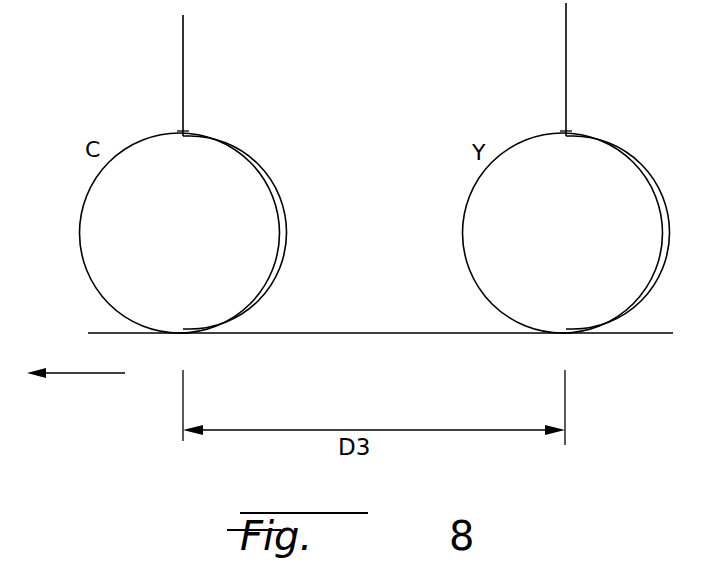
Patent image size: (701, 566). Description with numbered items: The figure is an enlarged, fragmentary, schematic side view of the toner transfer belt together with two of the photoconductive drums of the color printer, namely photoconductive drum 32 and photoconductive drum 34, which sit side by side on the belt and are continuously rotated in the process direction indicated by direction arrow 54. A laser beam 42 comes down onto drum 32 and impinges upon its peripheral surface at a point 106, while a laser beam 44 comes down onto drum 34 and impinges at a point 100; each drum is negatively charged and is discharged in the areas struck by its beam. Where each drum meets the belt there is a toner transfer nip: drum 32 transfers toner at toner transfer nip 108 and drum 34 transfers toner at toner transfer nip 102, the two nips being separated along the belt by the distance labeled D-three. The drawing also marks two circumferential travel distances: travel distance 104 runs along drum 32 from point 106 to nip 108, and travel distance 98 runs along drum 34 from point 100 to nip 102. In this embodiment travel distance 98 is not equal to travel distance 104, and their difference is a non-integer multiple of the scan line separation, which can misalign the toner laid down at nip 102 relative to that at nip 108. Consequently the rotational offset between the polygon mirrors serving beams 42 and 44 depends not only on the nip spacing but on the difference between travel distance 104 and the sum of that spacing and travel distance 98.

The photoconductive drum 32 is at (198, 268).
The photoconductive drum 34 is at (545, 268).
The laser beam 42 is at (183, 60).
The laser beam 44 is at (566, 58).
The direction arrow 54 is at (84, 373).
The travel distance 98 is at (640, 180).
The point 100 is at (566, 133).
The toner transfer nip 102 is at (566, 333).
The travel distance 104 is at (257, 176).
The point 106 is at (183, 133).
The toner transfer nip 108 is at (183, 333).